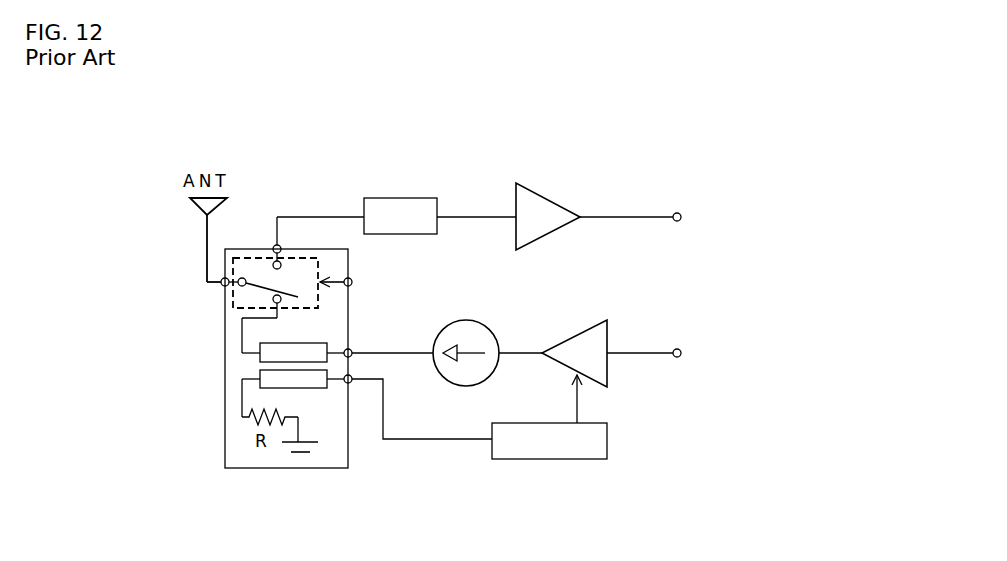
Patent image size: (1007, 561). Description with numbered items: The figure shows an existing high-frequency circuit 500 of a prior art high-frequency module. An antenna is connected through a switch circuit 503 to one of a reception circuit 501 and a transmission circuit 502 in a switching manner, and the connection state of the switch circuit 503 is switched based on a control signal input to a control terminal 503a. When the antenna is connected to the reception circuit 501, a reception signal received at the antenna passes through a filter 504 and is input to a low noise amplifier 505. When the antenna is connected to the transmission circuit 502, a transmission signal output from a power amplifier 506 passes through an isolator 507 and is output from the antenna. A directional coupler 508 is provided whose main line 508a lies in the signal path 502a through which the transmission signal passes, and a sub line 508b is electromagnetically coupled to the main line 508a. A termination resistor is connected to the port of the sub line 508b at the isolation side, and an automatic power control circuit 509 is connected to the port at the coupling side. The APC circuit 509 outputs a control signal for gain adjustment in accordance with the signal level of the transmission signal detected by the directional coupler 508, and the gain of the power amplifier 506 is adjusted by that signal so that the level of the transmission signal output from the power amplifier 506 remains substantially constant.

The high-frequency circuit 500 is at (598, 137).
The reception circuit 501 is at (484, 182).
The transmission circuit 502 is at (456, 460).
The signal path 502a is at (395, 350).
The switch circuit 503 is at (247, 254).
The control terminal 503a is at (357, 278).
The filter 504 is at (405, 198).
The low noise amplifier 505 is at (550, 198).
The power amplifier 506 is at (578, 327).
The isolator 507 is at (465, 320).
The directional coupler 508 is at (250, 364).
The main line 508a is at (267, 343).
The sub line 508b is at (308, 388).
The automatic power control (APC) circuit 509 is at (607, 440).